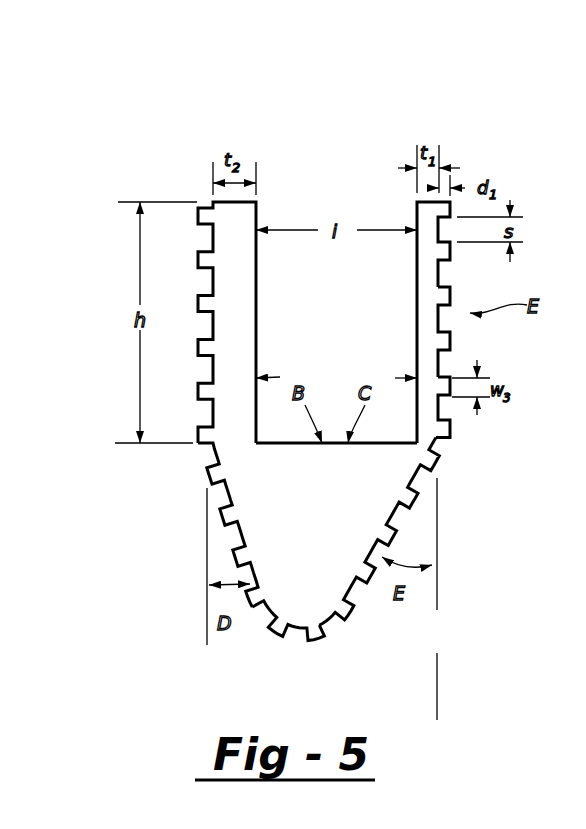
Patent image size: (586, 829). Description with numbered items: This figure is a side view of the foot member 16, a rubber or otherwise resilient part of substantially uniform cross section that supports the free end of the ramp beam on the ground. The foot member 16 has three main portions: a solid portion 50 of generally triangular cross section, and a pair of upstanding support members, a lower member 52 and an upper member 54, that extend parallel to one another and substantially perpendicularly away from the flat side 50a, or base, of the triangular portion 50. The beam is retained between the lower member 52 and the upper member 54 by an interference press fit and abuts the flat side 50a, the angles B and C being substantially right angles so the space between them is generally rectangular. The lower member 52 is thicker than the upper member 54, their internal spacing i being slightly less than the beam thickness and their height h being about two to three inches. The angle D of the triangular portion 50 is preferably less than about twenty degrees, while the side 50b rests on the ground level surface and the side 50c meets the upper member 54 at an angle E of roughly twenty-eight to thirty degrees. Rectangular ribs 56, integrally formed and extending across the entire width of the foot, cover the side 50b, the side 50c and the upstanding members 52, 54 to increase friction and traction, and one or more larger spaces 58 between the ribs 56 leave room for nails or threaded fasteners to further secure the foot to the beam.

The foot member 16 is at (489, 151).
The solid portion 50 is at (332, 409).
The flat side 50a is at (300, 443).
The side 50b is at (240, 543).
The side 50c is at (397, 527).
The lower member 52 is at (258, 216).
The upper member 54 is at (430, 297).
The ribs 56 is at (450, 432).
The larger spaces 58 is at (472, 329).